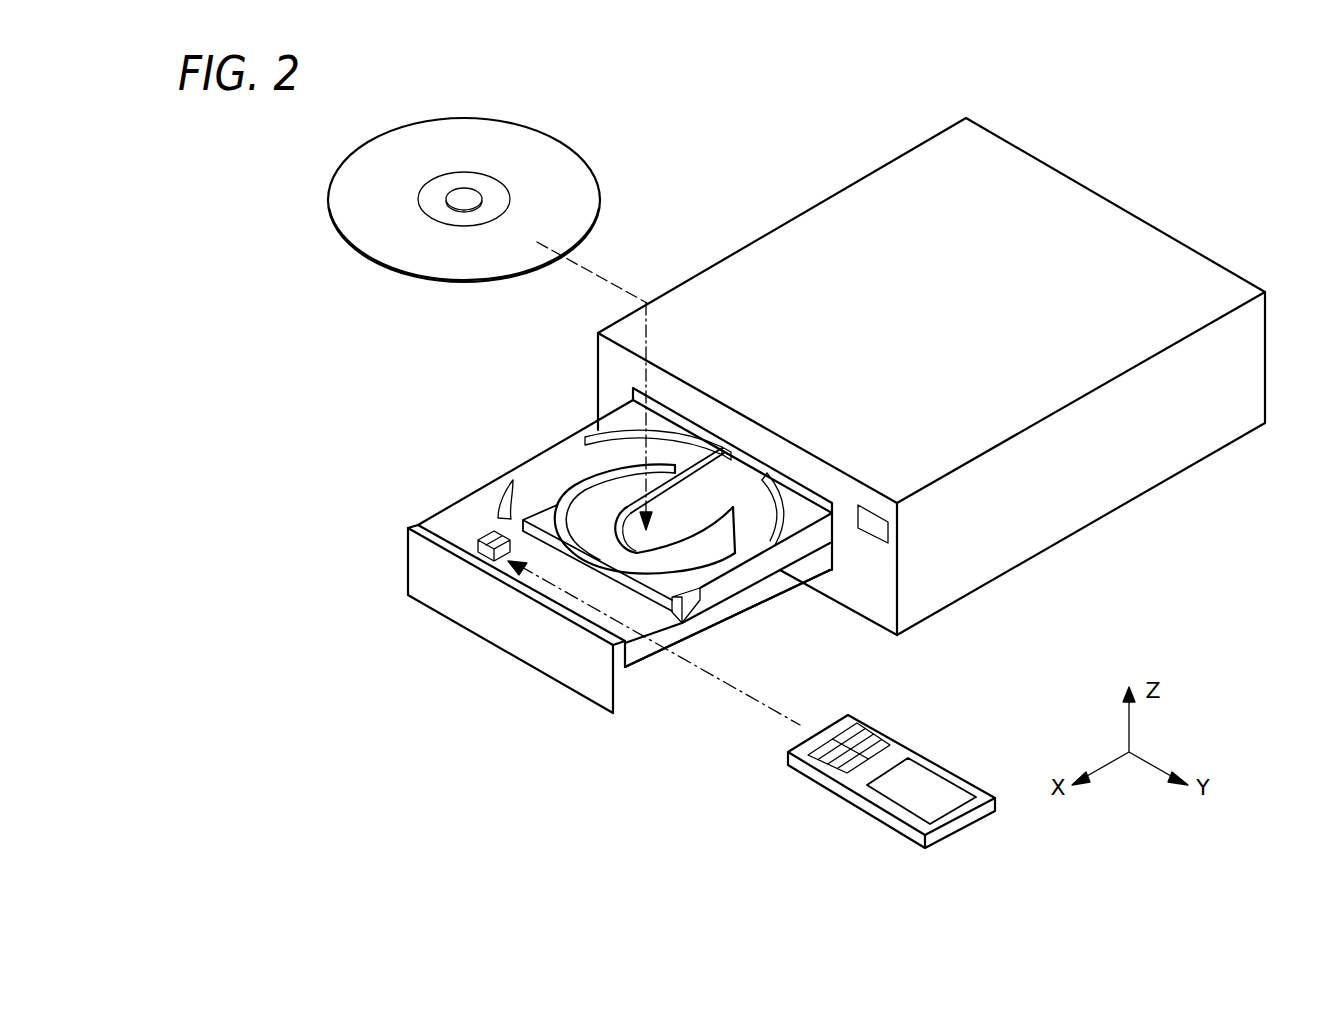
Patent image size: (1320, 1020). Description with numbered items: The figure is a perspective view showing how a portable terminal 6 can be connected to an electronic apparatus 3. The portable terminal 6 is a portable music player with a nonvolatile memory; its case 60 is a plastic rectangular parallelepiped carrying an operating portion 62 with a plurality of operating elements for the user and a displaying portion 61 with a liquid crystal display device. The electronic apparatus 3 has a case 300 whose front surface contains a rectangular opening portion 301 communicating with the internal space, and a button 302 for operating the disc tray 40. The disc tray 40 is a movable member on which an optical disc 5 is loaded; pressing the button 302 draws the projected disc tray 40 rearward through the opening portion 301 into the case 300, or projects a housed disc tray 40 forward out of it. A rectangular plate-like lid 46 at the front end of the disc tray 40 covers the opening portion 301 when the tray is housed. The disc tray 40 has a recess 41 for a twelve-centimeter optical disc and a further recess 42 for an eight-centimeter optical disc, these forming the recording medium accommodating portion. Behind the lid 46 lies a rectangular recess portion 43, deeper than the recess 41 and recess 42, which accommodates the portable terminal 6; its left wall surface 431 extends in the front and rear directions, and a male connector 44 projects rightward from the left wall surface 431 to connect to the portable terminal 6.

The electronic apparatus 3 is at (931, 399).
The optical disc 5 is at (591, 183).
The portable terminal 6 is at (895, 783).
The disc tray 40 is at (445, 528).
The recess 41 is at (735, 553).
The recess 42 is at (680, 556).
The recess portion 43 is at (627, 642).
The male connector 44 is at (492, 541).
The lid 46 is at (483, 622).
The case 60 is at (870, 805).
The displaying portion 61 is at (917, 773).
The operating portion 62 is at (840, 753).
The case 300 is at (1103, 212).
The opening portion 301 is at (827, 555).
The button 302 is at (870, 532).
The left wall surface 431 is at (512, 517).